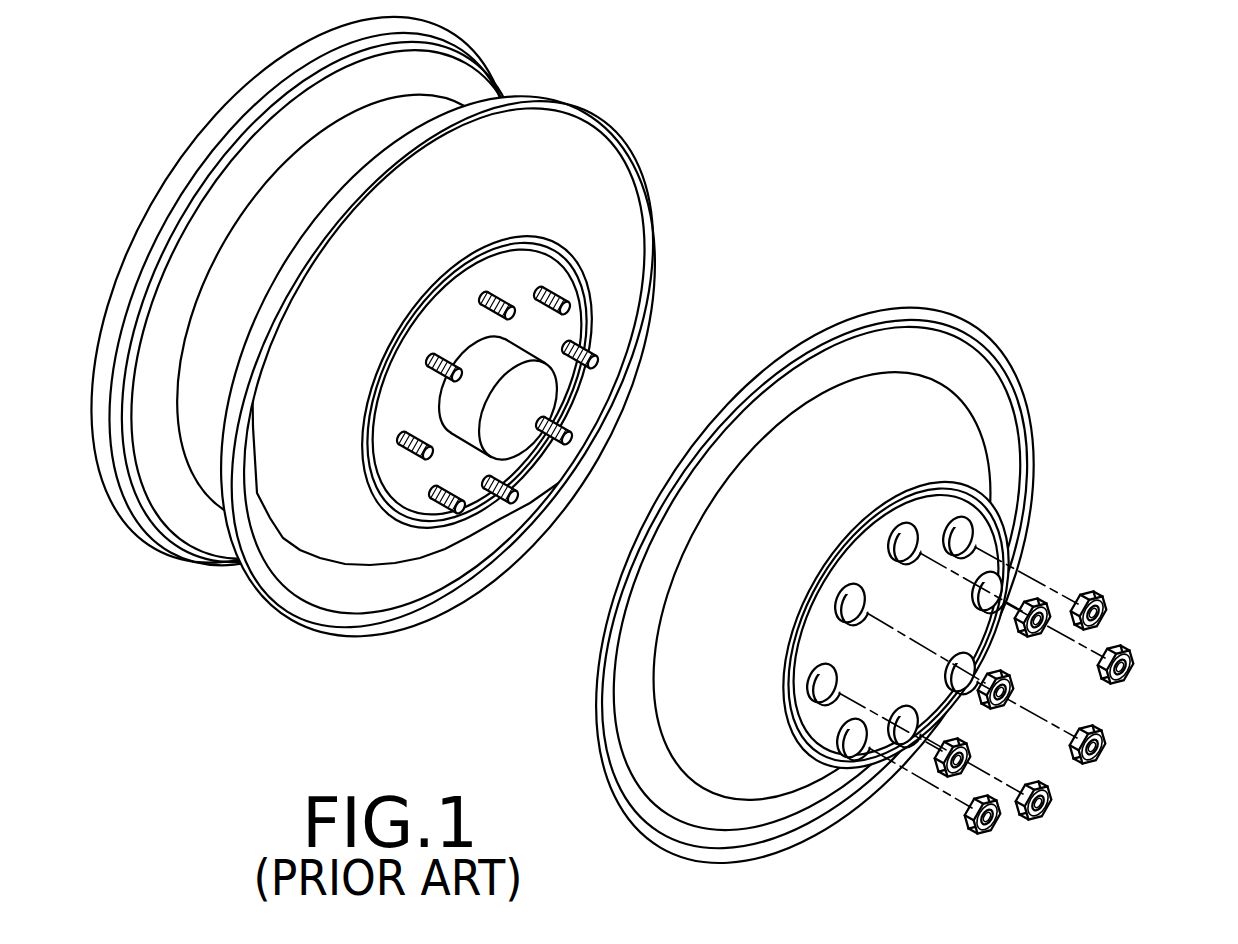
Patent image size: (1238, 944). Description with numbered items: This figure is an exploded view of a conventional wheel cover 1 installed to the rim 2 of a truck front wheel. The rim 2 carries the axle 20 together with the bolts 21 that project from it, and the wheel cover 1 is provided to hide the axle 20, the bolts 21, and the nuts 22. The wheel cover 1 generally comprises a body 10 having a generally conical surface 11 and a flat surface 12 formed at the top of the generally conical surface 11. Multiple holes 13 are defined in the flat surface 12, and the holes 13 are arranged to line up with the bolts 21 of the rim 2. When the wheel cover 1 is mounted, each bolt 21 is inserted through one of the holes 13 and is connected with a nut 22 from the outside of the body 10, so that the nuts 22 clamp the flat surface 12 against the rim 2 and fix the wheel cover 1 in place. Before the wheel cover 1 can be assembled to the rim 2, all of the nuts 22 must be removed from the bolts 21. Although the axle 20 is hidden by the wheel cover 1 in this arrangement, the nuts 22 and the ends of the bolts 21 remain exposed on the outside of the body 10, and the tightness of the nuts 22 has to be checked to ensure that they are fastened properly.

The wheel cover 1 is at (824, 558).
The rim 2 is at (592, 131).
The body 10 is at (916, 316).
The generally conical surface 11 is at (935, 429).
The flat surface 12 is at (938, 516).
The holes 13 is at (968, 534).
The axle 20 is at (537, 390).
The bolts 21 is at (562, 296).
The nuts 22 is at (1110, 604).